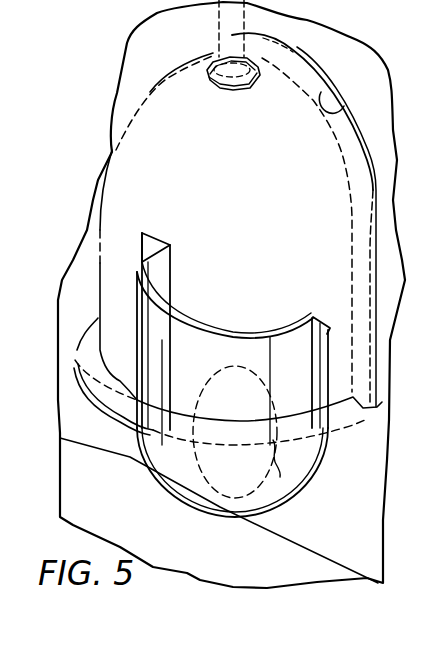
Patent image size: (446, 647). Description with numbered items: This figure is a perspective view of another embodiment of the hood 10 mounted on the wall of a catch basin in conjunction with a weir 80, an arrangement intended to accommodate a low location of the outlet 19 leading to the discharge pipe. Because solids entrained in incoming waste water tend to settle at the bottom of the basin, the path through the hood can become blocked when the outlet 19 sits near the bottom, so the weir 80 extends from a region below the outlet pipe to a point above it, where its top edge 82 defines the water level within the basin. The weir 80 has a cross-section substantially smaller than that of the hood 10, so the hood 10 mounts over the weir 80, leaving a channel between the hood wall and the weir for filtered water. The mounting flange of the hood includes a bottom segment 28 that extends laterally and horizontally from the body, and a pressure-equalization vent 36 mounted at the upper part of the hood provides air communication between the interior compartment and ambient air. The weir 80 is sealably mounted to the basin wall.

The hood 10 is at (113, 158).
The pressure-equalization vent 36 is at (218, 18).
The bottom segment 28 is at (353, 105).
The weir 80 is at (176, 352).
The top edge 82 is at (242, 332).
The outlet 19 is at (283, 473).